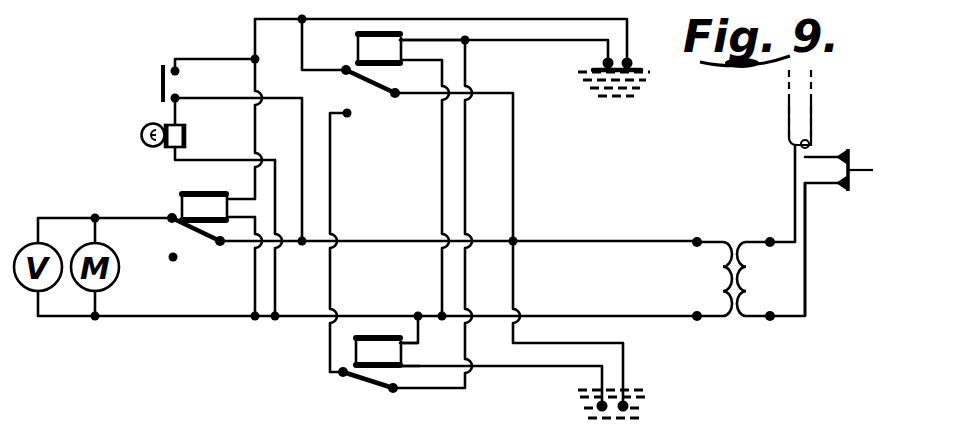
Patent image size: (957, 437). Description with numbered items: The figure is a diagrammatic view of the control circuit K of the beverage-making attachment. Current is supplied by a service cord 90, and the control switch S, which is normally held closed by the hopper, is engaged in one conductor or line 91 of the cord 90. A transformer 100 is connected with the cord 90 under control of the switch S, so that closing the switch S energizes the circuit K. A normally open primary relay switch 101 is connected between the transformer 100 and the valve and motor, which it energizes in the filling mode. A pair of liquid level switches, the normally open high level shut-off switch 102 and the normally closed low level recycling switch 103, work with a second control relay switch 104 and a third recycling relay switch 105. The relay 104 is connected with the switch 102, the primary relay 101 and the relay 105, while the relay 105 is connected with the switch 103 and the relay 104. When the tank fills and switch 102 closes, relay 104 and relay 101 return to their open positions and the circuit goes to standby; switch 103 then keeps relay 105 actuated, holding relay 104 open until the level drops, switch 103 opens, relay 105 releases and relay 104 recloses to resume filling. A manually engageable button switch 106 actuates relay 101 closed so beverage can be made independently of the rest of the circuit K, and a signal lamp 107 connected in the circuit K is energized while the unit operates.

The service cord 90 is at (785, 115).
The conductor or line 91 is at (808, 265).
The transformer 100 is at (752, 213).
The primary relay switch 101 is at (183, 246).
The high liquid level shut-off switch 102 is at (590, 85).
The low level recycling switch 103 is at (640, 407).
The control relay switch 104 is at (351, 97).
The recycling relay switch 105 is at (350, 387).
The manually engageable button switch 106 is at (152, 82).
The signal lamp 107 is at (141, 134).
The control switch S is at (875, 160).
The control circuit K is at (657, 168).